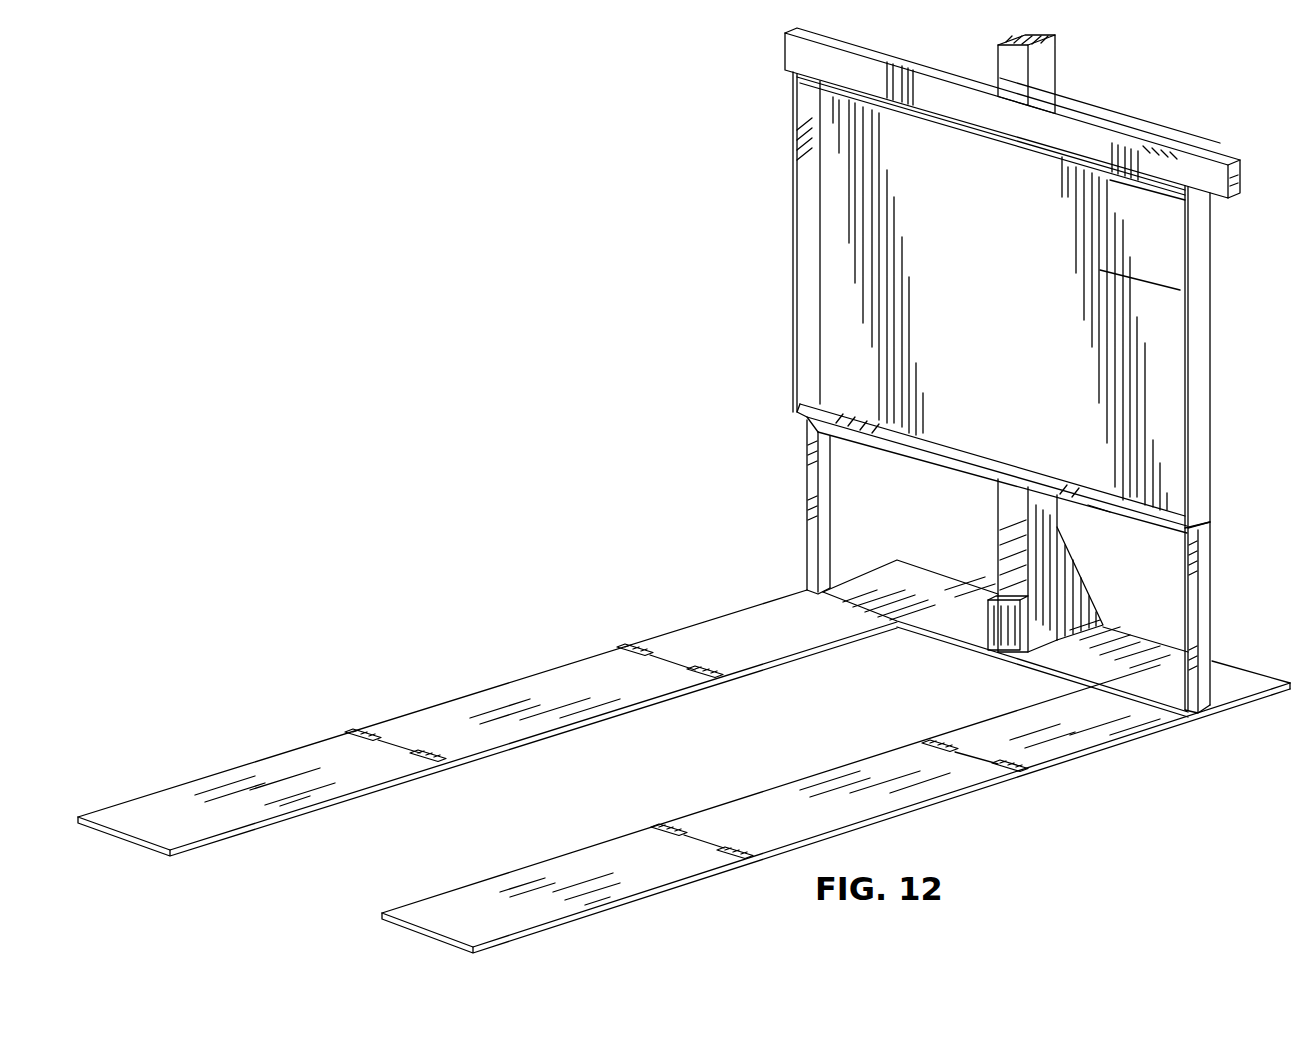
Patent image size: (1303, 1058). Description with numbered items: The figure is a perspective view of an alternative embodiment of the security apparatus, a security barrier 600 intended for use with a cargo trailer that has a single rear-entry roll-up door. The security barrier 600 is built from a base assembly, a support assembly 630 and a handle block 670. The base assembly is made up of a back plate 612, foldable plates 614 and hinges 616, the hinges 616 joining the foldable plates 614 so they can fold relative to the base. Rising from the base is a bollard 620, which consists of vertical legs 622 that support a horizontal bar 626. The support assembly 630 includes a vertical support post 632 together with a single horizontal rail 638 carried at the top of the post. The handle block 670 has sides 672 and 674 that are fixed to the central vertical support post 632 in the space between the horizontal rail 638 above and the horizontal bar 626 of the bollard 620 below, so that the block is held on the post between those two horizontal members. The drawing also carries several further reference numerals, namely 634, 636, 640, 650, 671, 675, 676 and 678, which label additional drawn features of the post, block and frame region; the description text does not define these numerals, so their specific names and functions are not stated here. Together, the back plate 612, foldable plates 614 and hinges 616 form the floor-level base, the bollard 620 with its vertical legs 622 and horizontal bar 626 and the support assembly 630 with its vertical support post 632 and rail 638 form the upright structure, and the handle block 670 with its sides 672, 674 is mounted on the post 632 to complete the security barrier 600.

The security barrier 600 is at (443, 402).
The back plate 612 is at (938, 578).
The foldable plates 614 is at (400, 737).
The hinges 616 is at (704, 668).
The bollard 620 is at (1210, 563).
The vertical legs 622 is at (815, 486).
The horizontal bar 626 is at (1085, 510).
The support assembly 630 is at (1060, 76).
The vertical support post 632 is at (1006, 78).
The post top 634 is at (1053, 38).
The center post 636 is at (1042, 652).
The horizontal rail 638 is at (786, 50).
The brace 640 is at (1090, 607).
The block 650 is at (995, 625).
The handle block 670 is at (788, 237).
The panel surface 671 is at (1090, 285).
The side 672 is at (1124, 192).
The side 674 is at (802, 416).
The display panel 675 is at (1008, 301).
The stile face 676 is at (788, 330).
The right stile 678 is at (1212, 365).